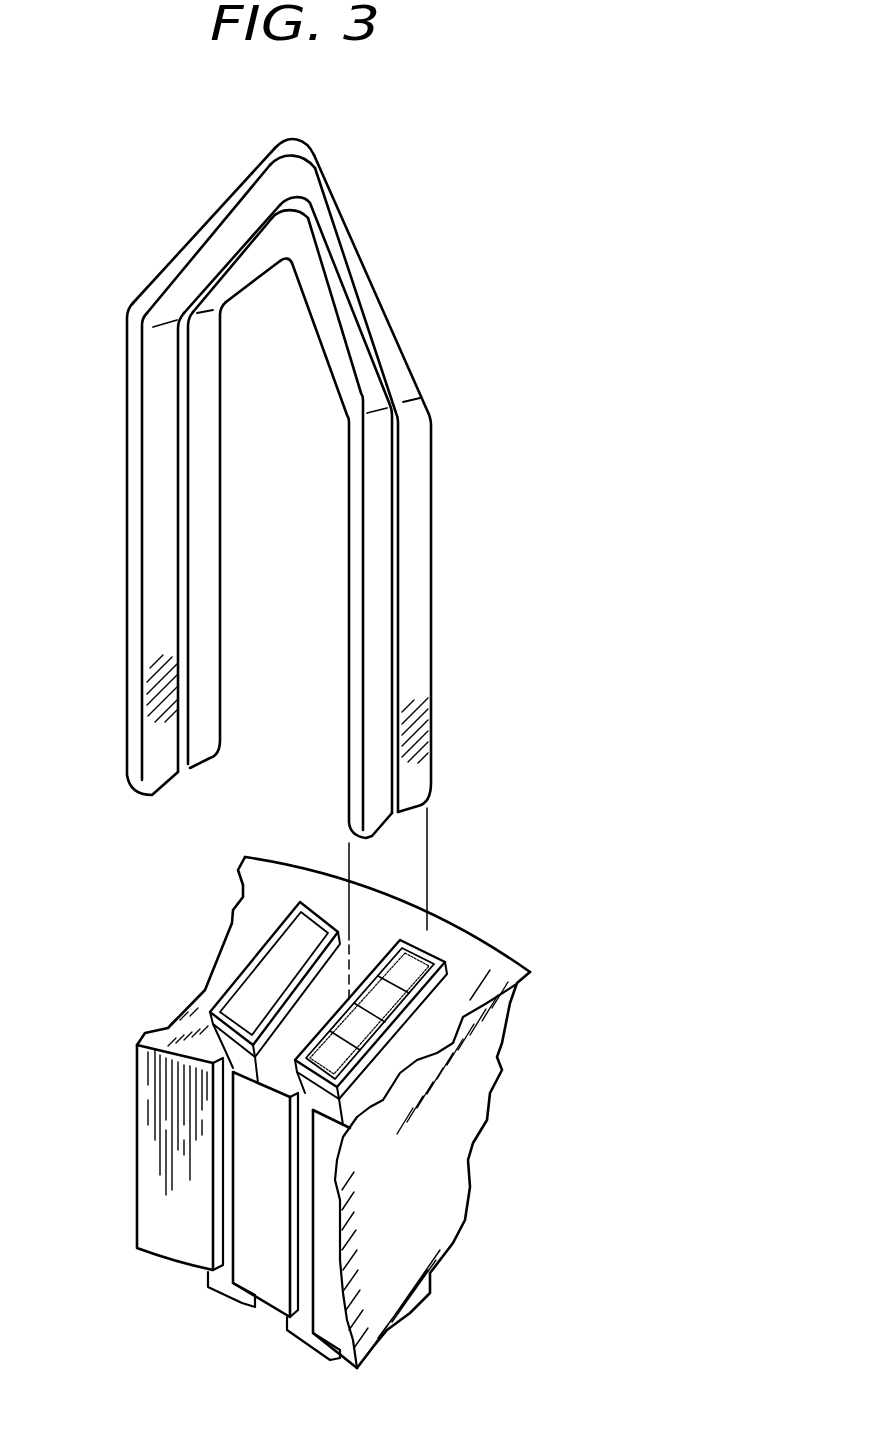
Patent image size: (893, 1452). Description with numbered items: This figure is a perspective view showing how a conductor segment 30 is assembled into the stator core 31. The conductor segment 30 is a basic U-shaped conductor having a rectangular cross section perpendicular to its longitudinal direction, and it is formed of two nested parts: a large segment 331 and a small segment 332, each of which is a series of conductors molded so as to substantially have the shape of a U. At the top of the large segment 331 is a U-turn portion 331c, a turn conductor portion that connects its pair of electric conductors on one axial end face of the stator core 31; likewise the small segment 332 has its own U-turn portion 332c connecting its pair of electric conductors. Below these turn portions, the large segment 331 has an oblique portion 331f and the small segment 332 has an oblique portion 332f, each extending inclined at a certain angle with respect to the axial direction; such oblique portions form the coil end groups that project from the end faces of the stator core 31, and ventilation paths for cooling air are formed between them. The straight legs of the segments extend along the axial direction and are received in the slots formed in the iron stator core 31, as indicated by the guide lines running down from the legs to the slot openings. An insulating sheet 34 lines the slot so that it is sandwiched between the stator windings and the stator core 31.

The conductor segment 30 is at (459, 296).
The large segment 331 is at (357, 260).
The U-turn portion 331c is at (308, 158).
The oblique portion 331f is at (227, 240).
The small segment 332 is at (375, 383).
The U-turn portion 332c is at (297, 217).
The oblique portion 332f is at (227, 290).
The stator core 31 is at (495, 965).
The insulating sheet 34 is at (432, 947).